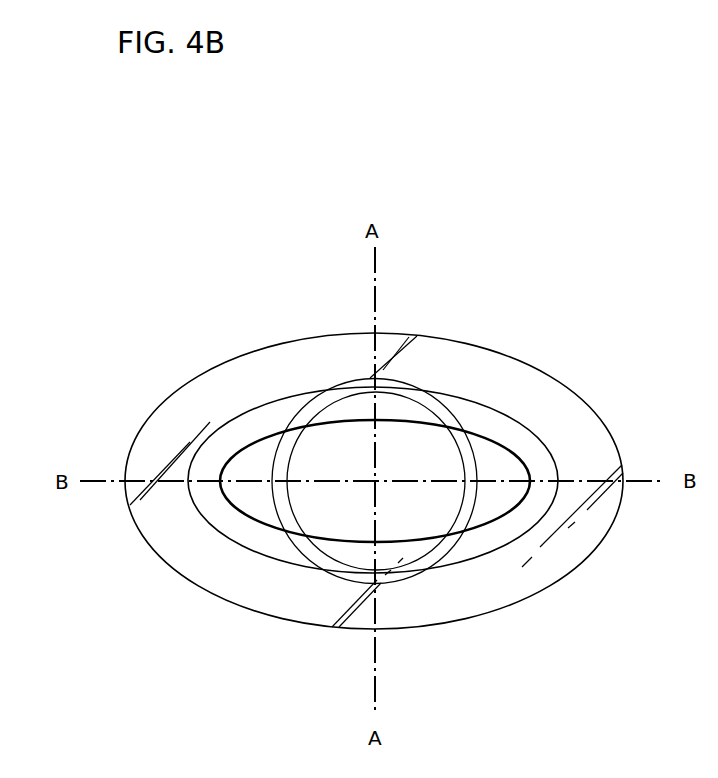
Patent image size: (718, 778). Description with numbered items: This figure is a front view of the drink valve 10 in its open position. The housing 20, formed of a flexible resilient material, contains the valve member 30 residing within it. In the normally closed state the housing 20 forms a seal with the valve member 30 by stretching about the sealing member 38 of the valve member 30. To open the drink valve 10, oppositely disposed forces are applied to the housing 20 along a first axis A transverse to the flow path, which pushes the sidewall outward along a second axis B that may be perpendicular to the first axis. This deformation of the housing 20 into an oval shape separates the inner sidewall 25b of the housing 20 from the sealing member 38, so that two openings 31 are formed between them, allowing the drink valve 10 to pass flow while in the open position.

The drink valve 10 is at (240, 320).
The housing 20 is at (383, 333).
The inner sidewall 25b is at (220, 475).
The valve member 30 is at (288, 455).
The openings 31 is at (505, 480).
The sealing member 38 is at (277, 520).